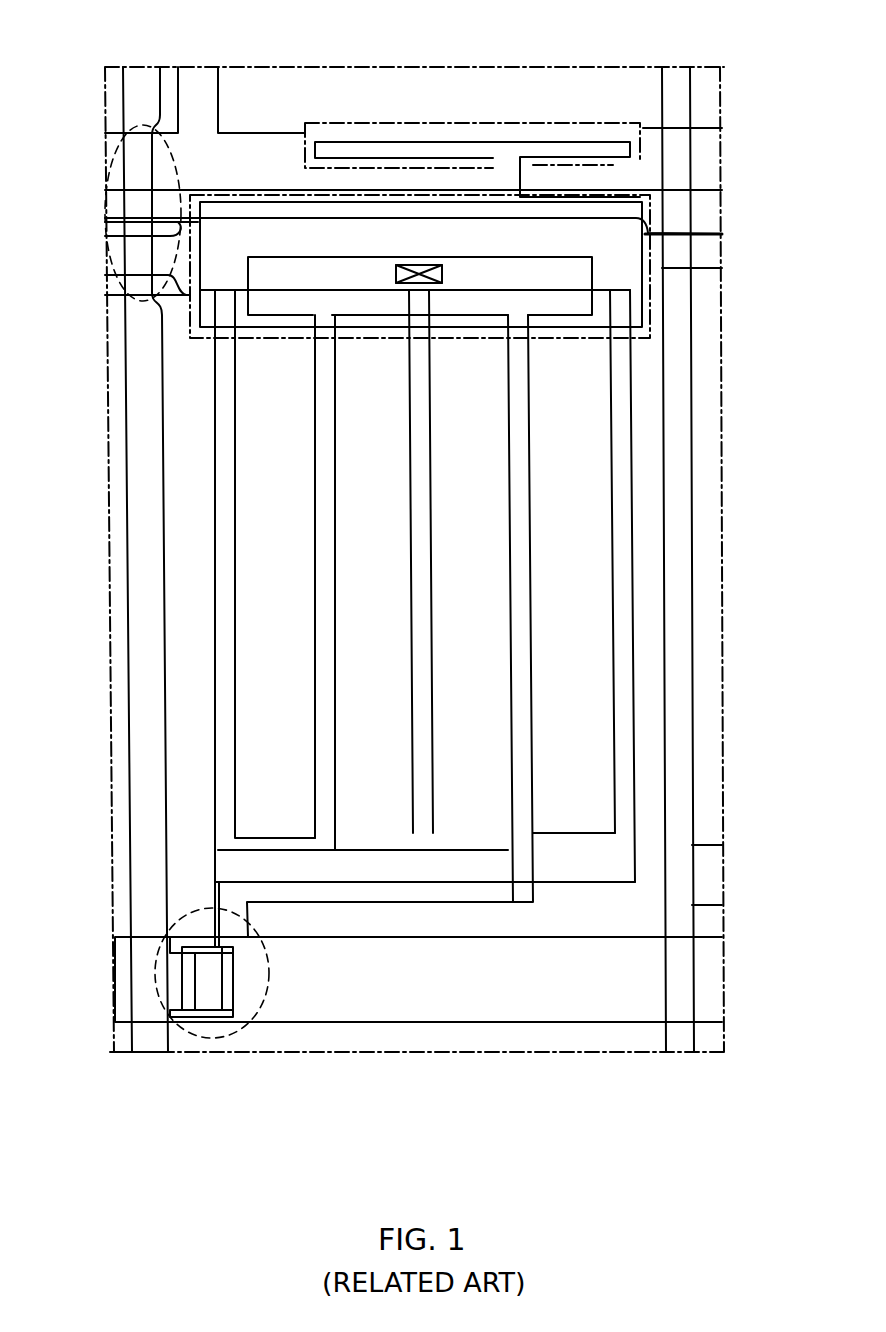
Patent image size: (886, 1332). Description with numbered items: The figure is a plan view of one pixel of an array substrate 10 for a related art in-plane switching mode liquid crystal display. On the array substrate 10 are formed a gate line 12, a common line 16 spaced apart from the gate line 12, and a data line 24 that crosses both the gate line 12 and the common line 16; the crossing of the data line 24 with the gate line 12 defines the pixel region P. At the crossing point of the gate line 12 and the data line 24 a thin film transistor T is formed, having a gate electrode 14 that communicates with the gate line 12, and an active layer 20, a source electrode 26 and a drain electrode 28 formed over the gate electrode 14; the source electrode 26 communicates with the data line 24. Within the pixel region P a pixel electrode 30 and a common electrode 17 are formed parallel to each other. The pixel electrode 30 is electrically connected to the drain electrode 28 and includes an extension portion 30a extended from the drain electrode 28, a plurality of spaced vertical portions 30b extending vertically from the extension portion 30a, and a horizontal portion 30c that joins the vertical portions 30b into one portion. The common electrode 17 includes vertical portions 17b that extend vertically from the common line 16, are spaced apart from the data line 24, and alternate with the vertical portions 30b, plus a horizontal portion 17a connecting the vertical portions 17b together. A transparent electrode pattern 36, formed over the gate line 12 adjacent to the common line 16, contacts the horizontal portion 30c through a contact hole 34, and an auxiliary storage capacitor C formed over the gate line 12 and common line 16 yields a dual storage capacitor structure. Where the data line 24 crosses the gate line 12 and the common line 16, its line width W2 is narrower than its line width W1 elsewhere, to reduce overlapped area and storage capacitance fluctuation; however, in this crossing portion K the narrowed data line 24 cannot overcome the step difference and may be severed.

The array substrate 10 is at (725, 600).
The gate line 12 is at (527, 1034).
The gate electrode 14 is at (208, 993).
The common line 16 is at (598, 222).
The common electrode 17 is at (638, 1098).
The horizontal portion of common electrode 17a is at (577, 870).
The vertical portions of common electrode 17b is at (623, 813).
The active layer 20 is at (203, 943).
The data line 24 is at (123, 614).
The source electrode 26 is at (195, 962).
The drain electrode 28 is at (257, 993).
The pixel electrode 30 is at (466, 1103).
The extension portion of pixel electrode 30a is at (413, 907).
The vertical portions of pixel electrode 30b is at (518, 813).
The horizontal portion of pixel electrode 30c is at (640, 236).
The contact hole 34 is at (412, 284).
The transparent electrode pattern 36 is at (593, 277).
The auxiliary storage capacitor C is at (650, 330).
The crossing portion K is at (104, 212).
The pixel region P is at (697, 422).
The thin film transistor T is at (228, 1033).
The line width of data line in other areas W1 is at (180, 690).
The line width of data line at crossing W2 is at (166, 226).